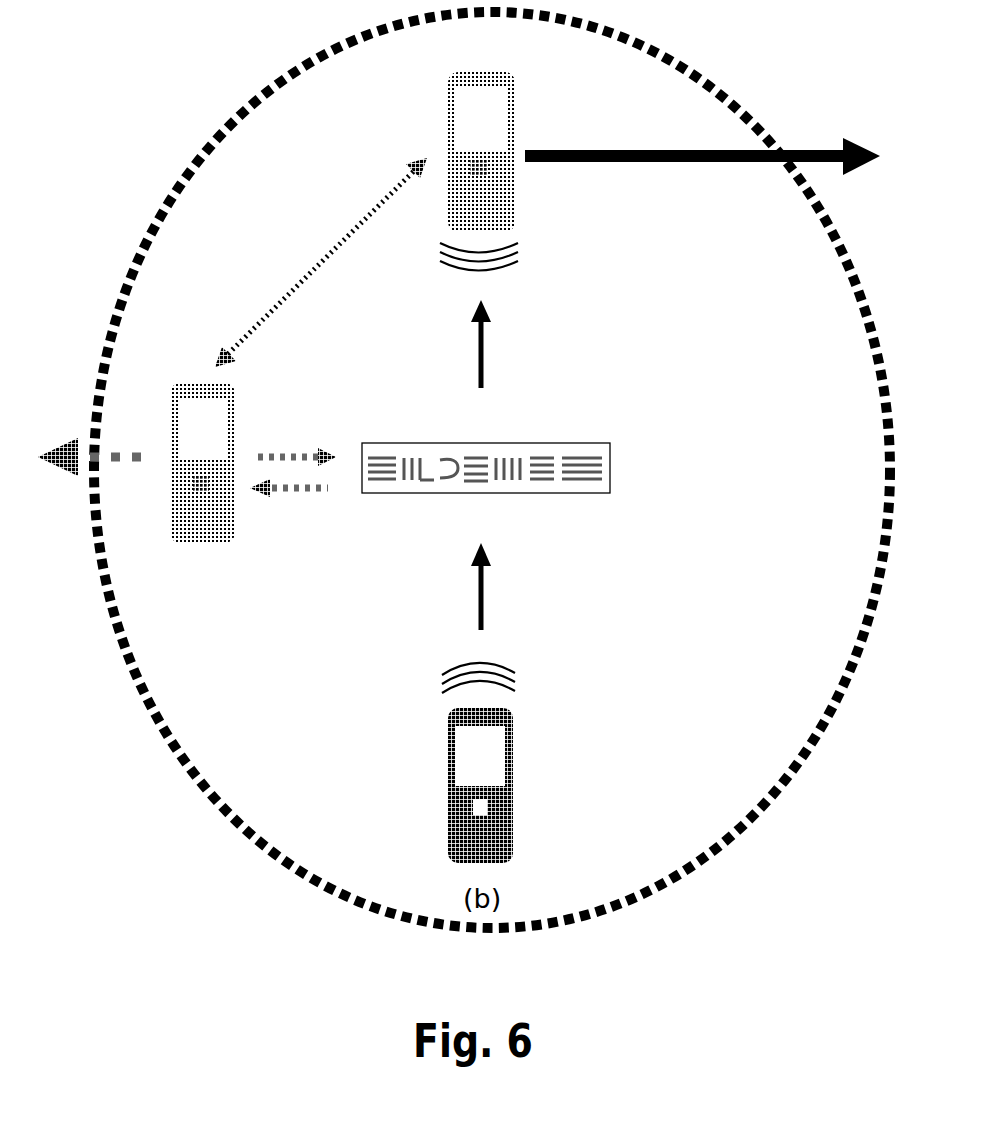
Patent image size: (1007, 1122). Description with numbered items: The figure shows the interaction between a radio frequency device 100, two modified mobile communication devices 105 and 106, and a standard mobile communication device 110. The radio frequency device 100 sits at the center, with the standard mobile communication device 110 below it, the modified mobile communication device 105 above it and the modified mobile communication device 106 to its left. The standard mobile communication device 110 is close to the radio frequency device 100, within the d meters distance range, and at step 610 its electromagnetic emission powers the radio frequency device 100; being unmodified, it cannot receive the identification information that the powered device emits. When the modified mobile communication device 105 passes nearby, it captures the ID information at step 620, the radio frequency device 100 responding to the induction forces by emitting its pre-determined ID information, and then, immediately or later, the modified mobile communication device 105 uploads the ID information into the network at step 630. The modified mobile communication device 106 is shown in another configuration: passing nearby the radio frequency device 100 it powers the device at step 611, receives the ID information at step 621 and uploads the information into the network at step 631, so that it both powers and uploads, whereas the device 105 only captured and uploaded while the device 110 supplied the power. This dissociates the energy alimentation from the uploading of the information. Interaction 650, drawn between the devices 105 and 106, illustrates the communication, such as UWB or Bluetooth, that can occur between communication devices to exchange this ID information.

The radio frequency device 100 is at (600, 447).
The modified mobile communication device 105 is at (513, 86).
The modified mobile communication device 106 is at (236, 404).
The standard mobile communication device 110 is at (513, 723).
The powering step 610 is at (531, 586).
The powering step 611 is at (297, 437).
The ID information capture step 620 is at (534, 344).
The ID information reception step 621 is at (292, 508).
The upload step 630 is at (702, 173).
The upload step 631 is at (104, 476).
The interaction 650 is at (321, 262).